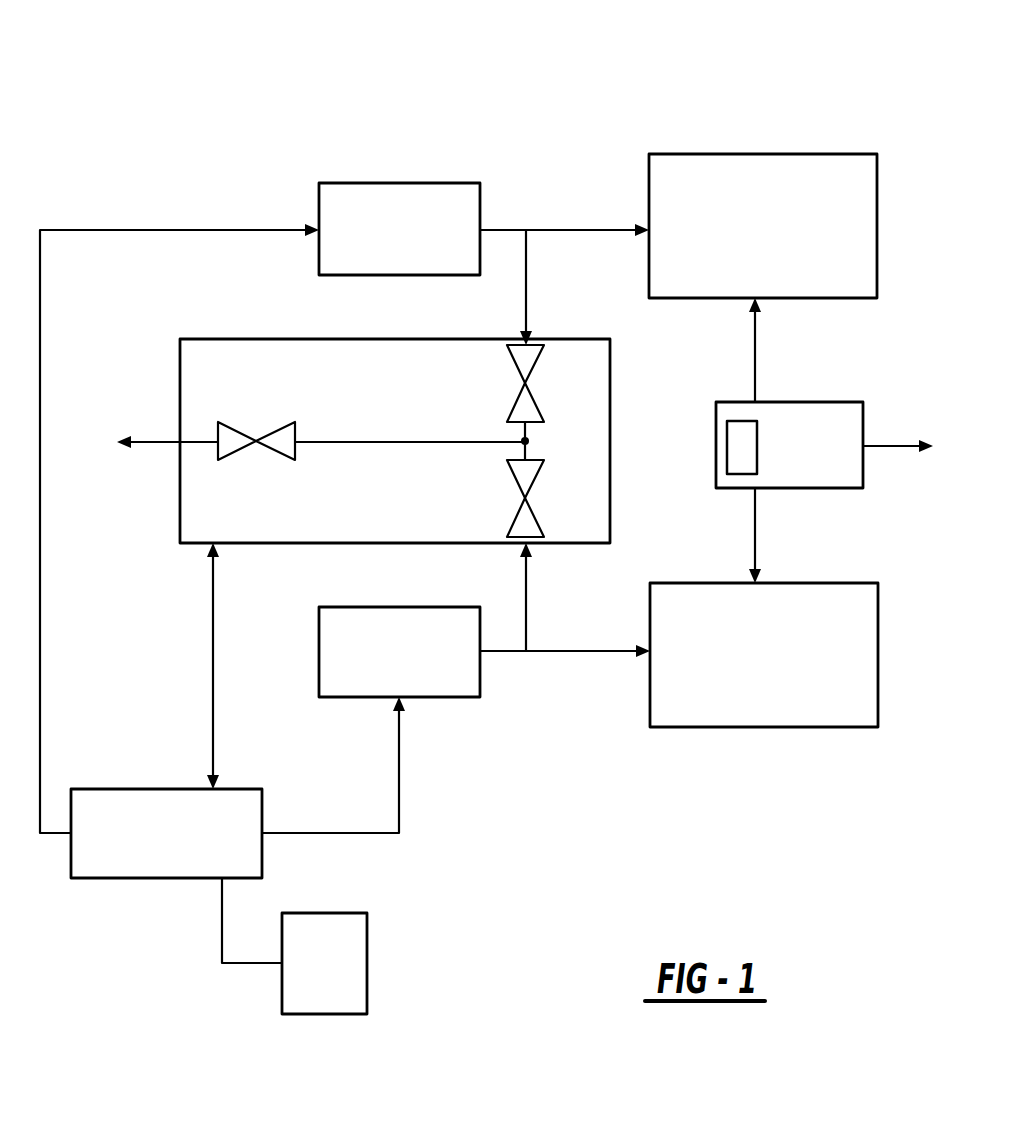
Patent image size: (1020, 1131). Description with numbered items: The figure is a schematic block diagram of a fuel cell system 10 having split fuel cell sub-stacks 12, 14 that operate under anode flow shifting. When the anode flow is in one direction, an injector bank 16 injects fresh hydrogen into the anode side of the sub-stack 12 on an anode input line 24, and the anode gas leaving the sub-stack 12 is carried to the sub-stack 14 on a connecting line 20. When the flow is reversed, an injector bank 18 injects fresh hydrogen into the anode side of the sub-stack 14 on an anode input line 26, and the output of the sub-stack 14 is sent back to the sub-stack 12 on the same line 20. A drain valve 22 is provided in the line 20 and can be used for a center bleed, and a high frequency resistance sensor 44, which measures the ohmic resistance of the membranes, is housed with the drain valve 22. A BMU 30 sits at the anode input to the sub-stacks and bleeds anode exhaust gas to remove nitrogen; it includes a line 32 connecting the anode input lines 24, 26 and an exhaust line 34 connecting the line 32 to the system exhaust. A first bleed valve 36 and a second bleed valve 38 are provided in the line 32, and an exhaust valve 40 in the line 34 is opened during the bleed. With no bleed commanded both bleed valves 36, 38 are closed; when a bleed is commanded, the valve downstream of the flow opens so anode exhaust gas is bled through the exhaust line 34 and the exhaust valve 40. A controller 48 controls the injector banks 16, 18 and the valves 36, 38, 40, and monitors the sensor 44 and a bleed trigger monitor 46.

The fuel cell system 10 is at (226, 63).
The sub-stack 12 is at (732, 154).
The sub-stack 14 is at (782, 727).
The injector bank 16 is at (445, 183).
The injector bank 18 is at (360, 697).
The connecting line 20 is at (755, 348).
The drain valve 22 is at (716, 402).
The anode input line 24 is at (587, 230).
The anode input line 26 is at (568, 651).
The BMU 30 is at (270, 339).
The line 32 is at (526, 603).
The exhaust line 34 is at (160, 440).
The first bleed valve 36 is at (537, 365).
The second bleed valve 38 is at (537, 478).
The exhaust valve 40 is at (240, 432).
The high frequency resistance sensor 44 is at (745, 474).
The bleed trigger monitor 46 is at (348, 1014).
The controller 48 is at (136, 878).